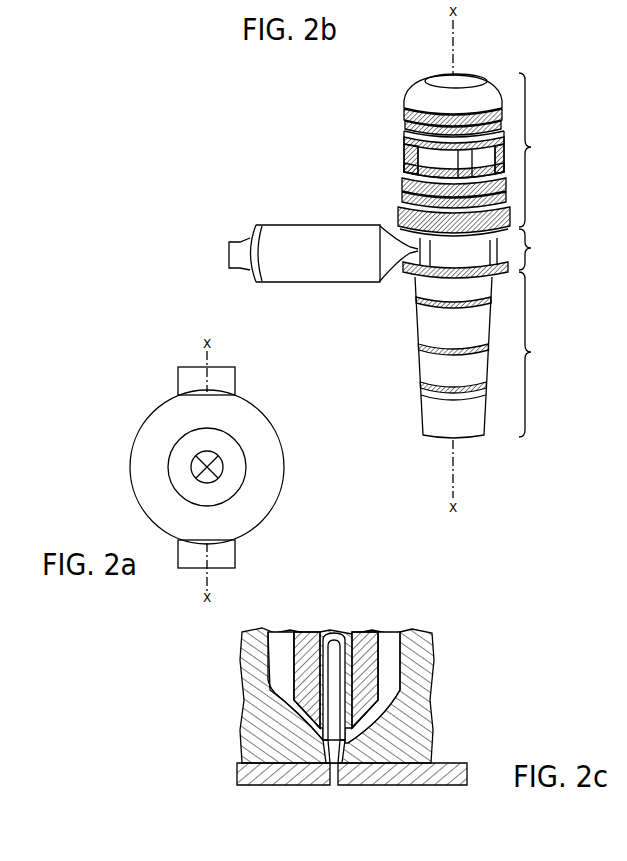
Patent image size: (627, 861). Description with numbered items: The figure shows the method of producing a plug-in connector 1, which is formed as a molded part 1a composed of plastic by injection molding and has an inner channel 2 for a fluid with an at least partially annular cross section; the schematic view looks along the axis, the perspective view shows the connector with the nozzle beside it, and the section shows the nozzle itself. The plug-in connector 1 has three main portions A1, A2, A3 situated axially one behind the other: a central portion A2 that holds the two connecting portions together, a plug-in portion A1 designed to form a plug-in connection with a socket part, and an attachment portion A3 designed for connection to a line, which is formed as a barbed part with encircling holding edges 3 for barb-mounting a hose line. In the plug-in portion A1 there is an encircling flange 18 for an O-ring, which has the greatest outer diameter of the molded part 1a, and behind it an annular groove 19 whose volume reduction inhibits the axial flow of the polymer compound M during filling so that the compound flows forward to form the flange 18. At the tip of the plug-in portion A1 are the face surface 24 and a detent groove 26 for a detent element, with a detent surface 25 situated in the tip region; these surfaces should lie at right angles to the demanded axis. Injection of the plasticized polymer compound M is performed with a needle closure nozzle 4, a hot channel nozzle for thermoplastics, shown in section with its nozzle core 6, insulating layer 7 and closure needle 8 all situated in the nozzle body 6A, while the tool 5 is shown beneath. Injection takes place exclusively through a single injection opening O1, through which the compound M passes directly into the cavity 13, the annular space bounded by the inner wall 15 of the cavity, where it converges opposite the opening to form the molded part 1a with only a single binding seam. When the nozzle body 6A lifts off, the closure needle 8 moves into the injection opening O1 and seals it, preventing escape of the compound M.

In FIG. 2B, the plug-in connector 1 is at (366, 163).
In FIG. 2B, the molded part 1a is at (425, 371).
In FIG. 2A, the molded part 1a is at (226, 556).
In FIG. 2B, the inner channel 2 is at (462, 77).
In FIG. 2B, the holding edges 3 is at (414, 301).
In FIG. 2B, the needle closure nozzle 4 is at (298, 225).
In FIG. 2A, the needle closure nozzle 4 is at (205, 466).
In FIG. 2C, the needle closure nozzle 4 is at (226, 729).
In FIG. 2C, the tool 5 is at (468, 773).
In FIG. 2C, the nozzle core 6 is at (368, 690).
In FIG. 2C, the nozzle body 6A is at (433, 742).
In FIG. 2C, the insulating layer 7 is at (388, 657).
In FIG. 2C, the closure needle 8 is at (387, 723).
In FIG. 2C, the cavity 13 is at (344, 806).
In FIG. 2C, the inner wall 15 is at (272, 787).
In FIG. 2B, the encircling flange 18 is at (398, 228).
In FIG. 2B, the annular groove 19 is at (505, 202).
In FIG. 2B, the face surface 24 is at (438, 76).
In FIG. 2B, the detent surface 25 is at (405, 103).
In FIG. 2B, the detent groove 26 is at (406, 125).
In FIG. 2B, the plug-in portion A1 is at (535, 150).
In FIG. 2B, the central portion A2 is at (535, 249).
In FIG. 2B, the attachment portion A3 is at (535, 354).
In FIG. 2C, the polymer compound M is at (322, 625).
In FIG. 2C, the injection opening O1 is at (350, 782).